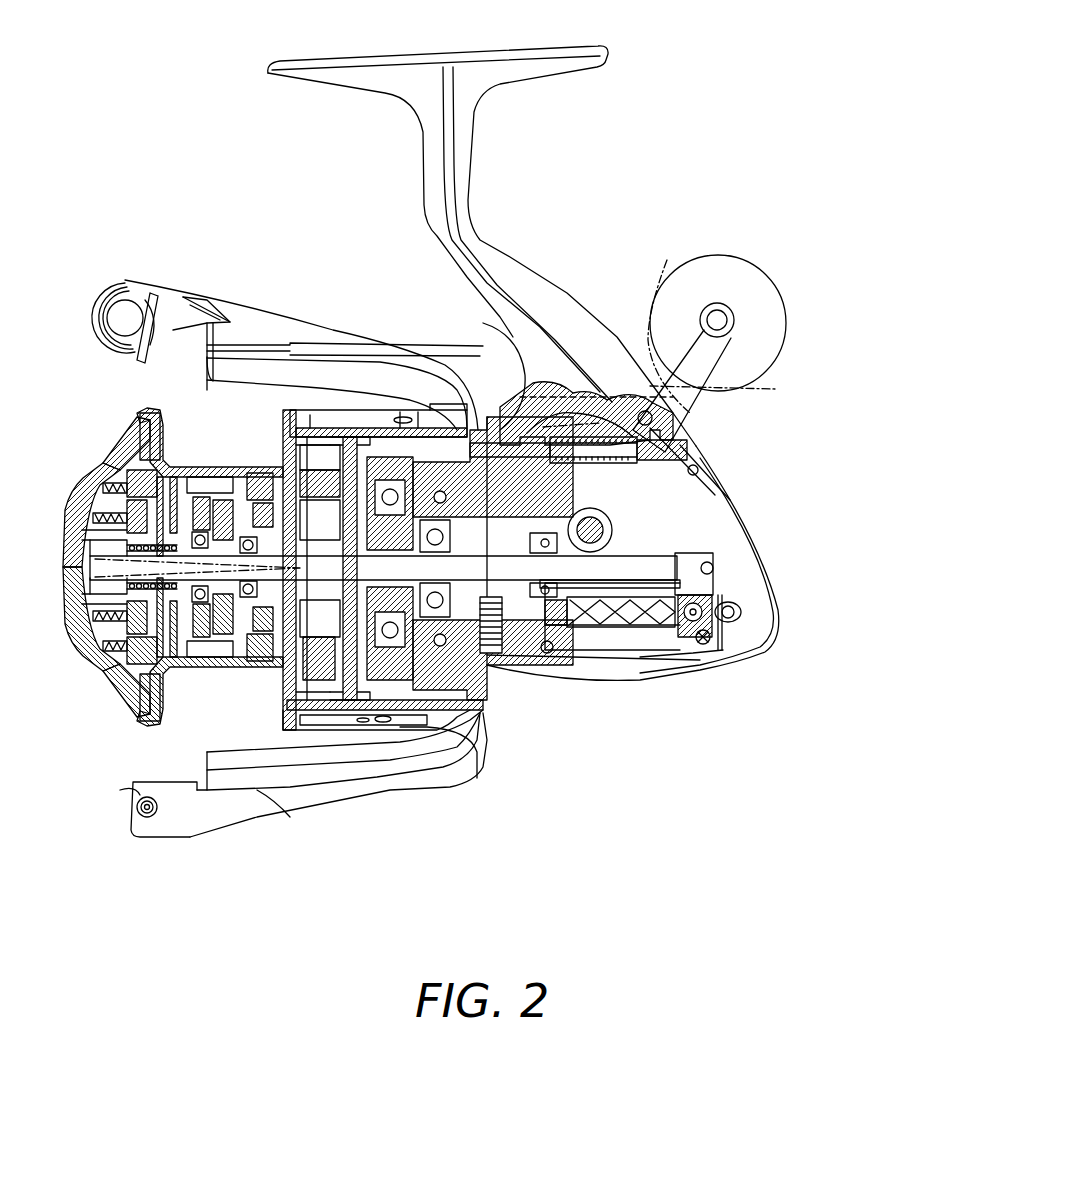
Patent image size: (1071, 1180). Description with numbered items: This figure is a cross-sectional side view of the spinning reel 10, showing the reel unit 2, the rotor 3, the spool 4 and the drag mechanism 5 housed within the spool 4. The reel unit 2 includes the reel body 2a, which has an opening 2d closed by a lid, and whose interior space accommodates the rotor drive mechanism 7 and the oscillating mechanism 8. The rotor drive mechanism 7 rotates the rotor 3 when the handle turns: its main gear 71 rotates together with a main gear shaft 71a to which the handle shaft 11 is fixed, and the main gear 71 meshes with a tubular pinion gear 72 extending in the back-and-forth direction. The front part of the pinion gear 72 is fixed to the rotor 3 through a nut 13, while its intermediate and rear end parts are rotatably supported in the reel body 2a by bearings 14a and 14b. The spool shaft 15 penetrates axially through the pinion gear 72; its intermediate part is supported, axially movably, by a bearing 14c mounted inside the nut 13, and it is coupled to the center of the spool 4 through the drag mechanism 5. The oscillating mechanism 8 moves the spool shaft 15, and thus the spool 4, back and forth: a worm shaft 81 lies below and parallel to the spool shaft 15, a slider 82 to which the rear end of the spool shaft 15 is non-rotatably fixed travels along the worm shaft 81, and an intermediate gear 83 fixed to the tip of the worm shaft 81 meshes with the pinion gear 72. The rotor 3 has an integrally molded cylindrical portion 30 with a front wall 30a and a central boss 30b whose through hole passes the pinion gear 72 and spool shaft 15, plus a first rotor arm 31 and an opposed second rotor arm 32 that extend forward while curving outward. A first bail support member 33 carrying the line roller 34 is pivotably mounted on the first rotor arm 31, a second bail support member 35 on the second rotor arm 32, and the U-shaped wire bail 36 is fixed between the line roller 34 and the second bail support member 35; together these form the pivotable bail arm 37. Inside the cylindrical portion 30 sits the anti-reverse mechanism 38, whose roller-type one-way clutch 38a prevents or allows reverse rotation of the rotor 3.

The spinning reel 10 is at (660, 82).
The reel unit 2 is at (578, 287).
The reel body 2a is at (650, 330).
The opening 2d is at (707, 312).
The rotor 3 is at (378, 300).
The spool 4 is at (222, 455).
The drag mechanism 5 is at (207, 640).
The rotor drive mechanism 7 is at (640, 530).
The oscillating mechanism 8 is at (667, 640).
The handle shaft 11 is at (614, 520).
The nut 13 is at (312, 365).
The bearing 14a is at (488, 670).
The bearing 14b is at (570, 640).
The bearing 14c is at (292, 640).
The spool shaft 15 is at (612, 580).
The cylindrical portion 30 is at (386, 420).
The front wall 30a is at (335, 680).
The boss 30b is at (370, 640).
The first rotor arm 31 is at (335, 330).
The second rotor arm 32 is at (370, 795).
The first bail support member 33 is at (190, 298).
The line roller 34 is at (122, 282).
The second bail support member 35 is at (213, 825).
The bail 36 is at (120, 792).
The bail arm 37 is at (97, 347).
The anti-reverse mechanism 38 is at (412, 407).
The one-way clutch 38a is at (473, 407).
The main gear 71 is at (690, 425).
The main gear shaft 71a is at (575, 515).
The pinion gear 72 is at (493, 577).
The worm shaft 81 is at (720, 600).
The slider 82 is at (717, 673).
The intermediate gear 83 is at (497, 660).